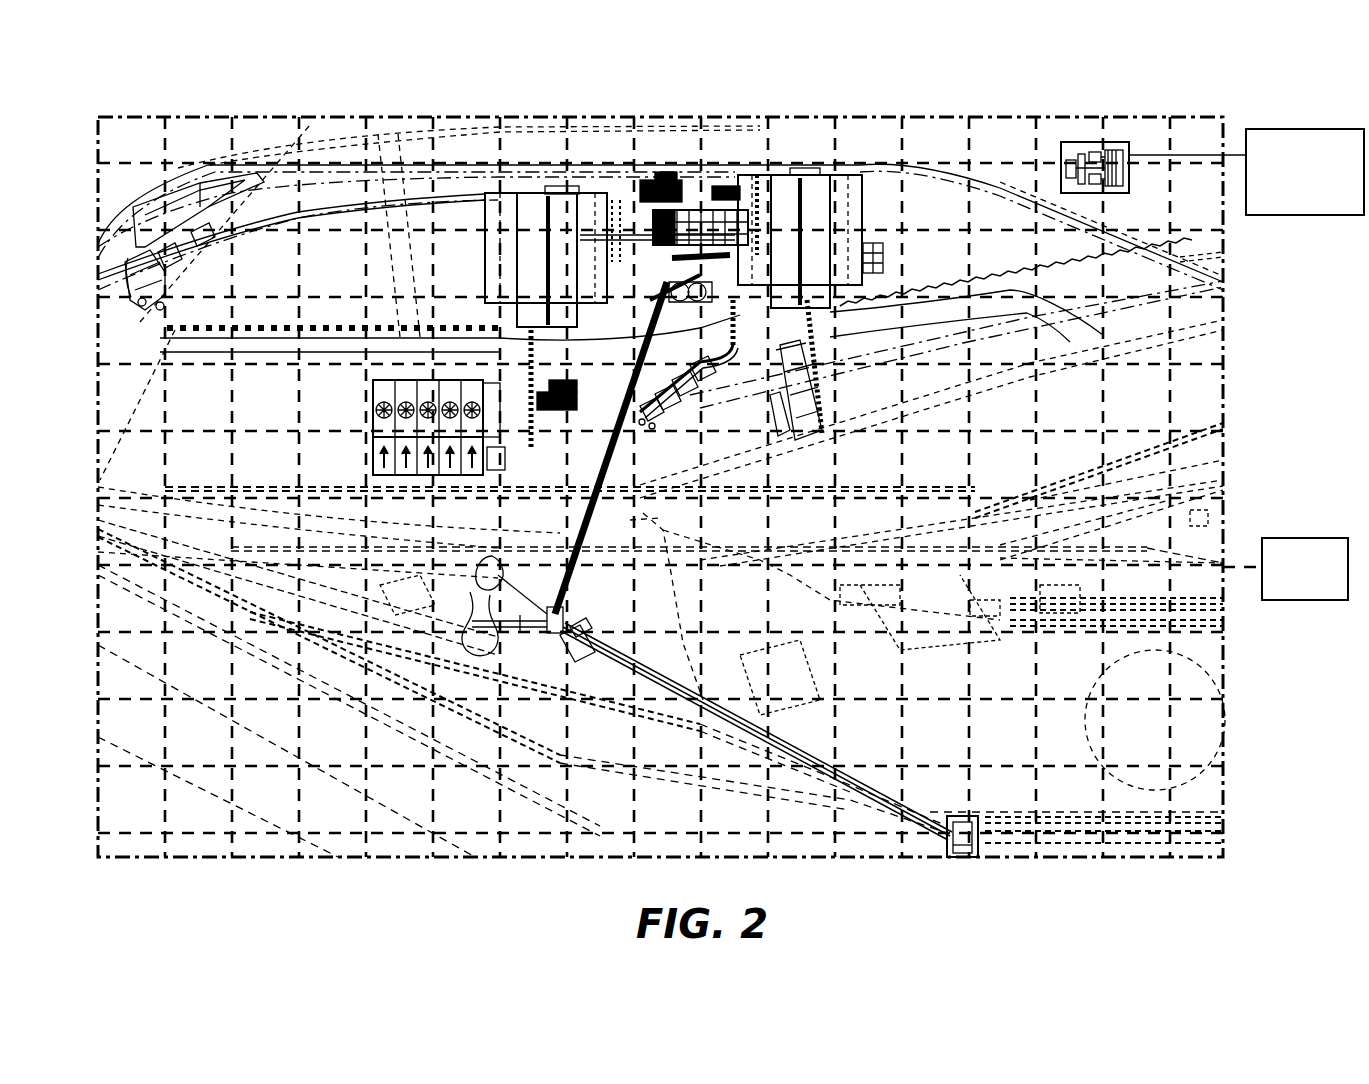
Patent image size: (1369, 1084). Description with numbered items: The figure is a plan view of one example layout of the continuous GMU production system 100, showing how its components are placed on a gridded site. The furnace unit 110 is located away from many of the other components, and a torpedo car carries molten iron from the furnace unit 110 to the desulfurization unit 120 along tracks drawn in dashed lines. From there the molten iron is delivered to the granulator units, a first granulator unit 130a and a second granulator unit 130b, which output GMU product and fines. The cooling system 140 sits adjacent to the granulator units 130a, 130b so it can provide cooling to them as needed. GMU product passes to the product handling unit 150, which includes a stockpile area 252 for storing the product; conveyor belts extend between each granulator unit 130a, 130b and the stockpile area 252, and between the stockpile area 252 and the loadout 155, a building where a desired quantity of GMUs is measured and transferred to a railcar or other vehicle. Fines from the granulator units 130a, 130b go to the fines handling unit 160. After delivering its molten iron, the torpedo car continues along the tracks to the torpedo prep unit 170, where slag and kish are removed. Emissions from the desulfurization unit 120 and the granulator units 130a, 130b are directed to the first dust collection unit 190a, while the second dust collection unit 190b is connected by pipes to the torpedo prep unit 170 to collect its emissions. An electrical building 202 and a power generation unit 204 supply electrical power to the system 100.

The continuous GMU production system 100 is at (105, 88).
The furnace unit 110 is at (1305, 600).
The desulfurization unit 120 is at (873, 407).
The first granulator unit 130a is at (821, 265).
The second granulator unit 130b is at (565, 262).
The cooling system 140 is at (456, 364).
The product handling unit 150 is at (711, 572).
The loadout 155 is at (984, 806).
The fines handling unit 160 is at (708, 334).
The torpedo prep unit 170 is at (260, 260).
The first dust collection unit 190a is at (709, 449).
The second dust collection unit 190b is at (152, 352).
The electrical building 202 is at (1107, 142).
The power generation unit 204 is at (1305, 215).
The stockpile area 252 is at (493, 613).